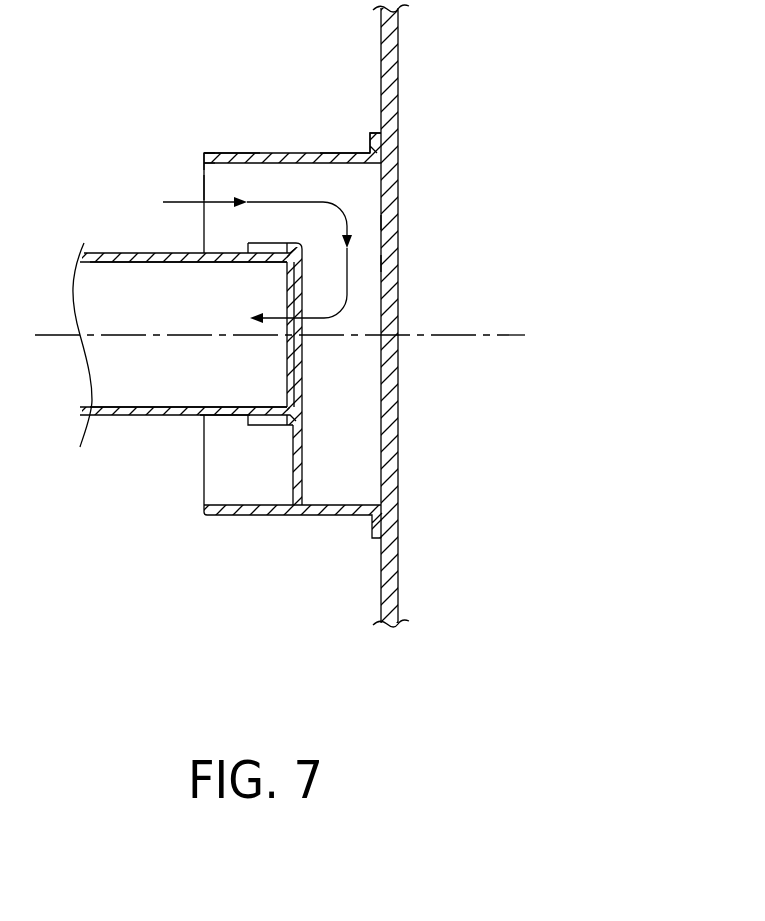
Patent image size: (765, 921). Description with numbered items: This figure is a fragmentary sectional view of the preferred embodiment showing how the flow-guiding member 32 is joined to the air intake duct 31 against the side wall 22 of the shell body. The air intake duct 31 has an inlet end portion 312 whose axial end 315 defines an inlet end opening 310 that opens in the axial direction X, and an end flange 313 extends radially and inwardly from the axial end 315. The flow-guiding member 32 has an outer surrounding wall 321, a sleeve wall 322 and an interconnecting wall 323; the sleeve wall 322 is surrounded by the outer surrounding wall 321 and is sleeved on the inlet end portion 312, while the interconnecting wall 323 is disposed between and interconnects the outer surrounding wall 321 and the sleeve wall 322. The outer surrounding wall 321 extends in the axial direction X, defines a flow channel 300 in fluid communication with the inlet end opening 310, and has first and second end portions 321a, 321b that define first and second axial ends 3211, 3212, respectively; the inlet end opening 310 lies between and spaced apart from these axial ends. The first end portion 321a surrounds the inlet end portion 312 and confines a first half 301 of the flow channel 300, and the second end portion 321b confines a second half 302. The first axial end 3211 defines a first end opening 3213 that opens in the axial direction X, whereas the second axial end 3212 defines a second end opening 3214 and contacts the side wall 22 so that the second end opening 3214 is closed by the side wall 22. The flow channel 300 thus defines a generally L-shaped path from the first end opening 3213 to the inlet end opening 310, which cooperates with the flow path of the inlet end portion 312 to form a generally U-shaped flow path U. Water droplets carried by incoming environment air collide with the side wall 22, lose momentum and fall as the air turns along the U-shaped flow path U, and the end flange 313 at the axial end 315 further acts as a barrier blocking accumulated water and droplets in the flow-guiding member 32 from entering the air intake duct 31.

The side wall 22 is at (398, 60).
The flow-guiding member 32 is at (277, 135).
The outer surrounding wall 321 is at (307, 153).
The first end portion 321a is at (224, 153).
The second end portion 321b is at (337, 153).
The first axial end 3211 is at (203, 178).
The second axial end 3212 is at (375, 157).
The first end opening 3213 is at (203, 182).
The first half 301 is at (220, 190).
The air intake duct 31 is at (120, 432).
The inlet end opening 310 is at (287, 352).
The inlet end portion 312 is at (227, 415).
The end flange 313 is at (295, 388).
The sleeve wall 322 is at (263, 243).
The axial end 315 is at (283, 427).
The interconnecting wall 323 is at (300, 468).
The U-shaped flow path U is at (347, 293).
The flow channel 300 is at (378, 193).
The second half 302 is at (372, 263).
The second end opening 3214 is at (390, 222).
The axial direction X is at (513, 332).